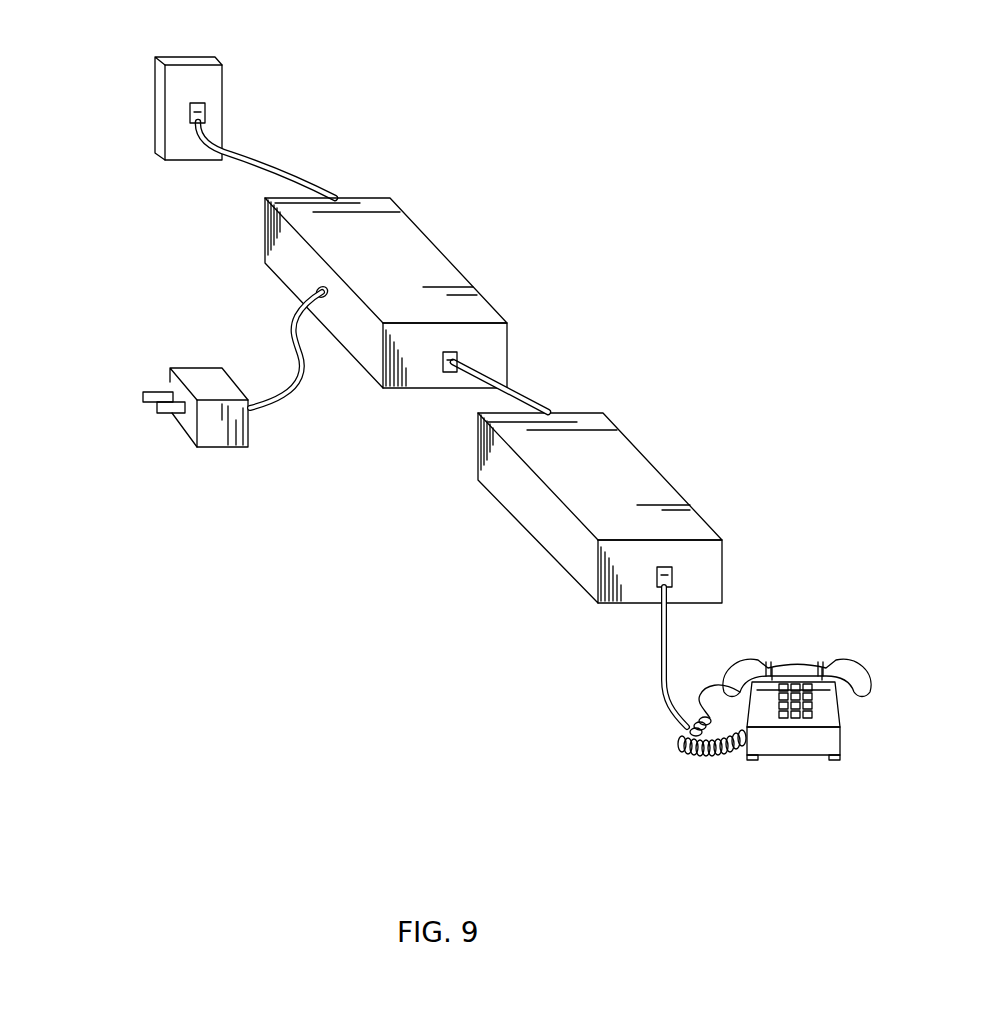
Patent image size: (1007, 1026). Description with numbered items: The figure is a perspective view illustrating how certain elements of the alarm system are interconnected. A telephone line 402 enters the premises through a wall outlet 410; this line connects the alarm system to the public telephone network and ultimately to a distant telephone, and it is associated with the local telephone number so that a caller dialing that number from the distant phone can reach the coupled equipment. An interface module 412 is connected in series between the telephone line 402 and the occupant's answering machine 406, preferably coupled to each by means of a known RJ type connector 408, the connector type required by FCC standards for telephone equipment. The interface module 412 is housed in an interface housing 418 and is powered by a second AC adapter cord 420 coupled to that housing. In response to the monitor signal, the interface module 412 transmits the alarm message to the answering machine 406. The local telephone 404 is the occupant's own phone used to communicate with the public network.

The telephone line 402 is at (253, 157).
The local telephone 404 is at (873, 678).
The answering machine 406 is at (640, 466).
The RJ type connector 408 is at (190, 108).
The wall outlet 410 is at (222, 73).
The interface module 412 is at (445, 291).
The interface housing 418 is at (480, 314).
The second AC adapter cord 420 is at (283, 413).